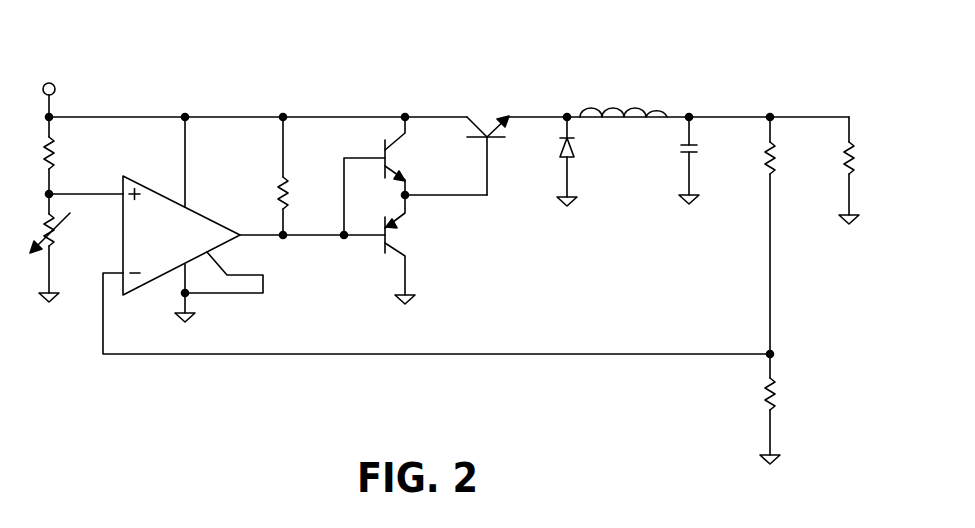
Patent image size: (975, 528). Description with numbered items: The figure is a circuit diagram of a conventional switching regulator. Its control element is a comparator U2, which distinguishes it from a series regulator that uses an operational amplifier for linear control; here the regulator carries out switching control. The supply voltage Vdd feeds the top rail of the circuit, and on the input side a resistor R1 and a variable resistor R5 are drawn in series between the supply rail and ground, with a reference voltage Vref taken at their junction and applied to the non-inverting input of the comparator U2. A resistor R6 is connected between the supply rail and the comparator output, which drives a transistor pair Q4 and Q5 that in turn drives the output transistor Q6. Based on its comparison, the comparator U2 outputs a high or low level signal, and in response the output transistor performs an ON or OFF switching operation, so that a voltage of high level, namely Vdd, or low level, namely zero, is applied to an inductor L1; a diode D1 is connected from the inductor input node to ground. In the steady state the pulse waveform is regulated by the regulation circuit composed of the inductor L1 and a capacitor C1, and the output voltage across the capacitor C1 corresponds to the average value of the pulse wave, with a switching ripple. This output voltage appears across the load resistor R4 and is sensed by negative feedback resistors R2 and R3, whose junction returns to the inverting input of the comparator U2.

The supply voltage Vdd is at (49, 84).
The reference voltage node Vref is at (21, 193).
The resistor R1 is at (64, 155).
The variable resistor R5 is at (57, 248).
The comparator U2 is at (181, 235).
The resistor R6 is at (297, 176).
The NPN transistor Q4 is at (389, 176).
The PNP transistor Q5 is at (410, 249).
The NPN pass transistor Q6 is at (488, 142).
The diode D1 is at (582, 161).
The inductor L1 is at (623, 97).
The capacitor C1 is at (703, 160).
The negative feedback resistor R2 is at (784, 235).
The negative feedback resistor R3 is at (783, 409).
The load resistor R4 is at (862, 170).